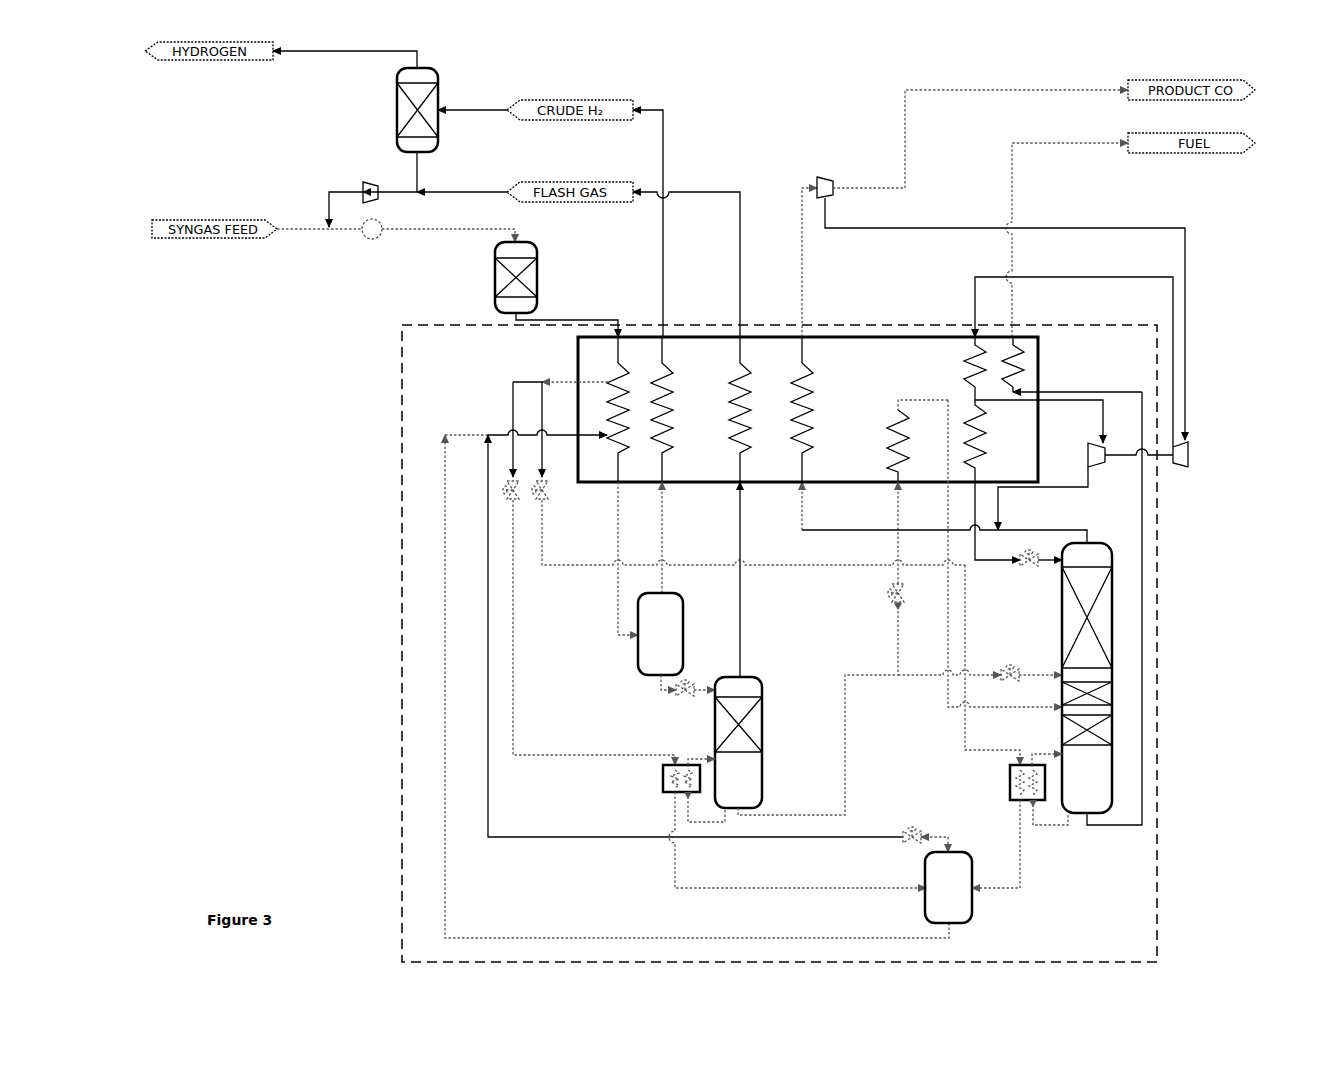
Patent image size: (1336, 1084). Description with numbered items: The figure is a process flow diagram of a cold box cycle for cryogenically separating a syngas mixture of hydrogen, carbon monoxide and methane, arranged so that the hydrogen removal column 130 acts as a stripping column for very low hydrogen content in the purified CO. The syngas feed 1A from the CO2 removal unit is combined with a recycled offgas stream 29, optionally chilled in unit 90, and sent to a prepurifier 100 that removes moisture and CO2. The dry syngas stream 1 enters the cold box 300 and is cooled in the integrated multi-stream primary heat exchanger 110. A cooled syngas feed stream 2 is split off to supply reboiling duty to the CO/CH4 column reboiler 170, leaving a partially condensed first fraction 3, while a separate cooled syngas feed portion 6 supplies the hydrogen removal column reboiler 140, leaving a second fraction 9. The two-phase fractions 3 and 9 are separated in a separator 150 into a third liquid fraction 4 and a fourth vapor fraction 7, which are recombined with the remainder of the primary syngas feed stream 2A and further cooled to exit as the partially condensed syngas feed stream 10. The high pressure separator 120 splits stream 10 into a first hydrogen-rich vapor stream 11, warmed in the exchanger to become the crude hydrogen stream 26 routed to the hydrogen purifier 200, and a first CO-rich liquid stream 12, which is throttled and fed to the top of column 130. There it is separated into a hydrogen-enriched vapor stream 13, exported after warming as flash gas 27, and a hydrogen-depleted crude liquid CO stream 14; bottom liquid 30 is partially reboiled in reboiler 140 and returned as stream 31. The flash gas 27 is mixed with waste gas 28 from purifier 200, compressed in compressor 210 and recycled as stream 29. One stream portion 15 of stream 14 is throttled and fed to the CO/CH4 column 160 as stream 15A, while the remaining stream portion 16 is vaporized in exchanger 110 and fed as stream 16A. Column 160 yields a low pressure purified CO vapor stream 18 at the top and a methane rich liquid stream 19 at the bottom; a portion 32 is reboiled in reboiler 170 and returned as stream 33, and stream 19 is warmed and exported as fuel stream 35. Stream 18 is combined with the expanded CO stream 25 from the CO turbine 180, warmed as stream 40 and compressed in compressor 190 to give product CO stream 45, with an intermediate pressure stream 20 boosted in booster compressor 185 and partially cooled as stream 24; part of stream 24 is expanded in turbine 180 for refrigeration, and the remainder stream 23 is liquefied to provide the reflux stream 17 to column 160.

The dry syngas stream 1 is at (567, 321).
The syngas feed 1A is at (319, 243).
The cooled syngas feed stream 2 is at (739, 473).
The primary syngas feed stream remainder 2A is at (607, 409).
The first syngas feed stream fraction 3 is at (996, 844).
The third liquid feed stream fraction 4 is at (697, 684).
The cooled syngas feed portion 6 is at (584, 573).
The fourth vapor feed stream fraction 7 is at (718, 649).
The second syngas feed stream fraction 9 is at (797, 853).
The partially condensed syngas feed stream 10 is at (615, 558).
The first hydrogen-rich vapor stream 11 is at (669, 465).
The first CO-rich liquid stream 12 is at (676, 687).
The hydrogen-enriched vapor stream 13 is at (748, 507).
The hydrogen-depleted crude liquid CO stream 14 is at (818, 745).
The stream portion 15 is at (980, 553).
The crude CO feed stream 15A is at (980, 666).
The remaining stream portion 16 is at (905, 542).
The crude CO vapor feed stream 16A is at (992, 665).
The recycled purified CO reflux stream 17 is at (1018, 548).
The low pressure purified CO vapor stream 18 is at (955, 530).
The methane rich liquid stream 19 is at (1114, 621).
The intermediate pressure CO stream 20 is at (1021, 319).
The remainder CO stream 23 is at (1068, 403).
The partially cooled CO stream 24 is at (1072, 381).
The expanded CO stream 25 is at (1043, 498).
The crude hydrogen stream 26 is at (662, 223).
The flash gas 27 is at (700, 264).
The waste gas 28 is at (433, 172).
The recycled offgas stream 29 is at (335, 206).
The hydrogen depleted crude liquid CO stream 30 is at (704, 807).
The partially reboiled stream 31 is at (701, 751).
The methane rich liquid portion 32 is at (1048, 825).
The reboiled return stream 33 is at (1047, 749).
The fuel stream 35 is at (1067, 240).
The warmed low pressure CO stream 40 is at (809, 359).
The product CO stream 45 is at (980, 127).
The chilling unit 90 is at (438, 240).
The prepurifier 100 is at (495, 282).
The primary heat exchanger 110 is at (808, 409).
The high pressure separator 120 is at (660, 634).
The hydrogen removal column 130 is at (738, 742).
The hydrogen removal column reboiler 140 is at (663, 785).
The separator 150 is at (948, 887).
The CO/CH4 column 160 is at (1087, 678).
The CO/CH4 column reboiler 170 is at (1010, 770).
The CO turbine 180 is at (1098, 466).
The booster compressor 185 is at (1190, 458).
The CO compressor 190 is at (821, 178).
The hydrogen purifier 200 is at (397, 112).
The recycle compressor 210 is at (366, 181).
The cold box 300 is at (400, 445).